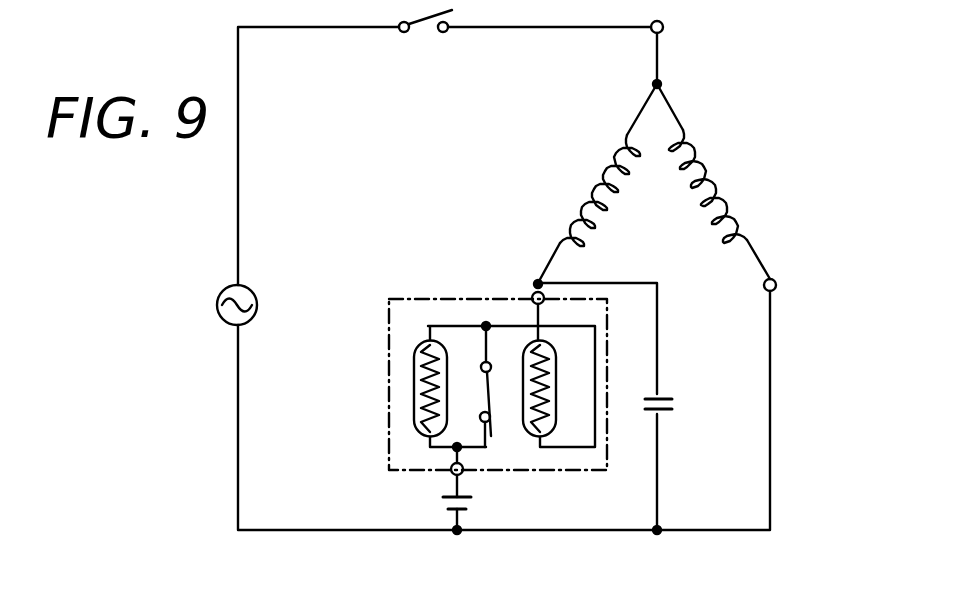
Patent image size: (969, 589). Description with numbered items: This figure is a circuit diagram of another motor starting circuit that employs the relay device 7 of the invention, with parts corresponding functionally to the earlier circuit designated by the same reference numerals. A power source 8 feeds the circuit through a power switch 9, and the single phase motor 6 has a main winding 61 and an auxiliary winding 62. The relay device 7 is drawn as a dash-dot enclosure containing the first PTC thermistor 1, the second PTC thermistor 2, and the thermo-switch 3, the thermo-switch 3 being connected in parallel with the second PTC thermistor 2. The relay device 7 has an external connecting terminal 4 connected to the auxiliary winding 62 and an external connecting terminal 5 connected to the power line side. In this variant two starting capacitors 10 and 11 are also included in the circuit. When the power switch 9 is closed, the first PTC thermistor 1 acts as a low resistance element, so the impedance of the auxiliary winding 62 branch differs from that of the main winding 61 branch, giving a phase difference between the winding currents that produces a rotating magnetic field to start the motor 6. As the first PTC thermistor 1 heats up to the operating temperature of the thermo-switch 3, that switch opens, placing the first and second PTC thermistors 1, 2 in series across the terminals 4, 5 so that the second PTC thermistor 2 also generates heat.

The first PTC thermistor 1 is at (557, 381).
The second PTC thermistor 2 is at (414, 368).
The thermo-switch 3 is at (482, 372).
The external connecting terminal 4 is at (533, 284).
The external connecting terminal 5 is at (452, 473).
The single phase motor 6 is at (660, 158).
The main winding 61 is at (719, 163).
The auxiliary winding 62 is at (600, 157).
The relay device 7 is at (403, 299).
The power source 8 is at (256, 293).
The power switch 9 is at (419, 33).
The starting capacitor 10 is at (471, 502).
The starting capacitor 11 is at (675, 405).